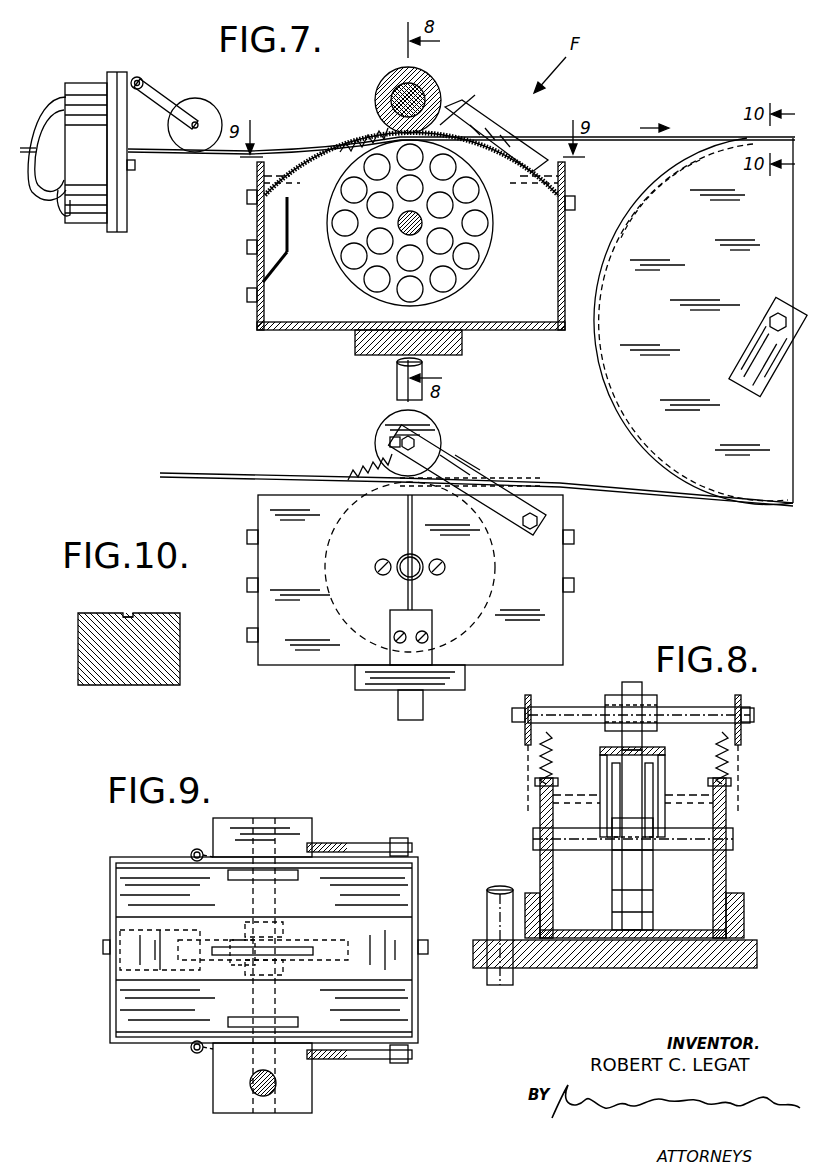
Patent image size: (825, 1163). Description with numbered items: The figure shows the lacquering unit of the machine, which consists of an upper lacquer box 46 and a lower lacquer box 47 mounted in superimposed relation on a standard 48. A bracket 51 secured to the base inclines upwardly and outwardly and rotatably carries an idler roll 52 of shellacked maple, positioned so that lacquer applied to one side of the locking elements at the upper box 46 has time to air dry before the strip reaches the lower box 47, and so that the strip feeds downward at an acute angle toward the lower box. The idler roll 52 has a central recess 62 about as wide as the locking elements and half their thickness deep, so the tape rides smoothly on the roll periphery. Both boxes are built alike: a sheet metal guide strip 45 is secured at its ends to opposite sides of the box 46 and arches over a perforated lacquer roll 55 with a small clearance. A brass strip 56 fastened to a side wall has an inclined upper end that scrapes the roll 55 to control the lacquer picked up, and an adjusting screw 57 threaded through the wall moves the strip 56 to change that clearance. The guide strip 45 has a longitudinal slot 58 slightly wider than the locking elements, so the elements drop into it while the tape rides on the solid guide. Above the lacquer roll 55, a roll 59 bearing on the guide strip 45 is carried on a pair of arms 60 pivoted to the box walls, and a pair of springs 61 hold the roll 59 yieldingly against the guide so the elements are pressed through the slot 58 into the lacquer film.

In FIG. 7, the guide strip 45 is at (505, 170).
In FIG. 8, the guide strip 45 is at (662, 770).
In FIG. 9, the guide strip 45 is at (225, 925).
In FIG. 7, the upper lacquer box 46 is at (566, 260).
In FIG. 7, the lower lacquer box 47 is at (565, 578).
In FIG. 7, the standard 48 is at (396, 381).
In FIG. 8, the standard 48 is at (492, 907).
In FIG. 9, the standard 48 is at (270, 1094).
In FIG. 7, the bracket 51 is at (752, 354).
In FIG. 7, the idler roll 52 is at (638, 388).
In FIG. 10, the idler roll 52 is at (180, 636).
In FIG. 7, the lacquer roll 55 is at (490, 246).
In FIG. 8, the lacquer roll 55 is at (636, 870).
In FIG. 9, the lacquer roll 55 is at (312, 961).
In FIG. 7, the brass strip 56 is at (289, 217).
In FIG. 8, the brass strip 56 is at (615, 772).
In FIG. 9, the brass strip 56 is at (125, 930).
In FIG. 7, the adjusting screw 57 is at (280, 263).
In FIG. 7, the slot 58 is at (442, 132).
In FIG. 8, the slot 58 is at (630, 746).
In FIG. 9, the slot 58 is at (292, 950).
In FIG. 7, the roll 59 is at (430, 88).
In FIG. 8, the roll 59 is at (628, 693).
In FIG. 7, the arms 60 is at (472, 140).
In FIG. 8, the arms 60 is at (523, 738).
In FIG. 9, the arms 60 is at (336, 842).
In FIG. 7, the springs 61 is at (372, 130).
In FIG. 8, the springs 61 is at (550, 752).
In FIG. 9, the springs 61 is at (193, 851).
In FIG. 7, the central recess 62 is at (652, 190).
In FIG. 10, the central recess 62 is at (130, 612).